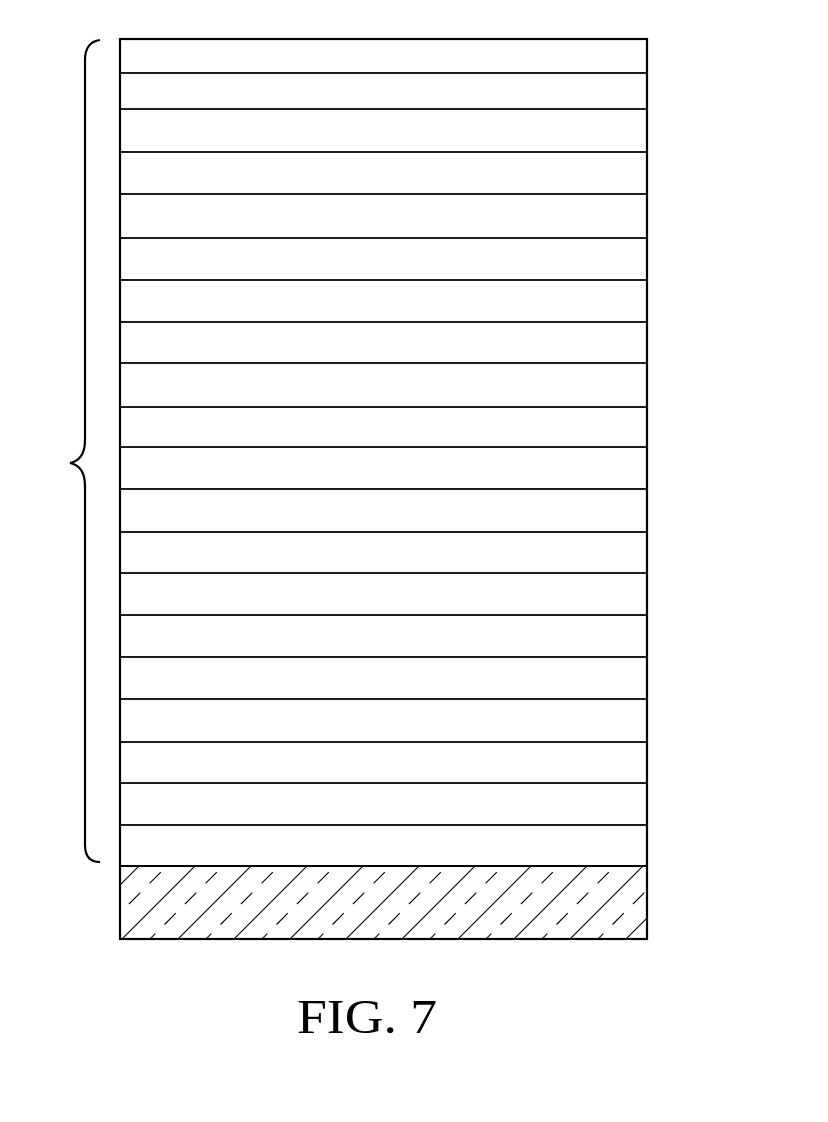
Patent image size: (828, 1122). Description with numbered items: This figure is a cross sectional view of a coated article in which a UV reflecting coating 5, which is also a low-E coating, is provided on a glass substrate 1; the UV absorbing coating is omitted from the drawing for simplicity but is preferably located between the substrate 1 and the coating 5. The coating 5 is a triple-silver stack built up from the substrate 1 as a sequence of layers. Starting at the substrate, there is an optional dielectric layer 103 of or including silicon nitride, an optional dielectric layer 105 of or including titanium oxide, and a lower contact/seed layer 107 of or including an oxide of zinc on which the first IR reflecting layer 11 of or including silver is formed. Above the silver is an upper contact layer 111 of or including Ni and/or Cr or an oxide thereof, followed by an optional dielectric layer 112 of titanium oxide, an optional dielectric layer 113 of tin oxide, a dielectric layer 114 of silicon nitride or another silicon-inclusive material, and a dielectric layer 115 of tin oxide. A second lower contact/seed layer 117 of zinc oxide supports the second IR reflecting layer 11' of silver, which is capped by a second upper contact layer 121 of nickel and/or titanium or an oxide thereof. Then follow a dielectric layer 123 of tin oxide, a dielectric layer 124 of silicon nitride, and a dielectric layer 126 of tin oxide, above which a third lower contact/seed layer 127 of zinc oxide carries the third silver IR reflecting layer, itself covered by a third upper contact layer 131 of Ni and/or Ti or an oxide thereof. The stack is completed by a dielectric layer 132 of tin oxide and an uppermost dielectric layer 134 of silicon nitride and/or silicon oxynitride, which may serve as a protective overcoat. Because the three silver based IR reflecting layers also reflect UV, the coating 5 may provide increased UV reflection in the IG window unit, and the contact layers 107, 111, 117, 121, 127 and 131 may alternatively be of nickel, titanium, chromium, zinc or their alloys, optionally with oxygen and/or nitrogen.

The glass substrate 1 is at (640, 911).
The UV reflecting coating 5 is at (70, 463).
The dielectric layer 103 is at (640, 852).
The dielectric layer 105 is at (640, 816).
The lower contact/seed layer 107 is at (640, 772).
The IR reflecting layer 11 is at (417, 720).
The upper contact layer 111 is at (640, 692).
The dielectric layer 112 is at (640, 646).
The dielectric layer 113 is at (640, 601).
The dielectric layer 114 is at (640, 557).
The dielectric layer 115 is at (640, 516).
The second lower contact/seed layer 117 is at (640, 477).
The second IR reflecting layer 11' is at (419, 427).
The second upper contact layer 121 is at (640, 392).
The dielectric layer 123 is at (640, 354).
The dielectric layer 124 is at (640, 311).
The dielectric layer 126 is at (640, 267).
The third lower contact/seed layer 127 is at (640, 232).
The third upper contact layer 131 is at (640, 142).
The dielectric layer 132 is at (640, 101).
The dielectric layer 134 is at (640, 64).